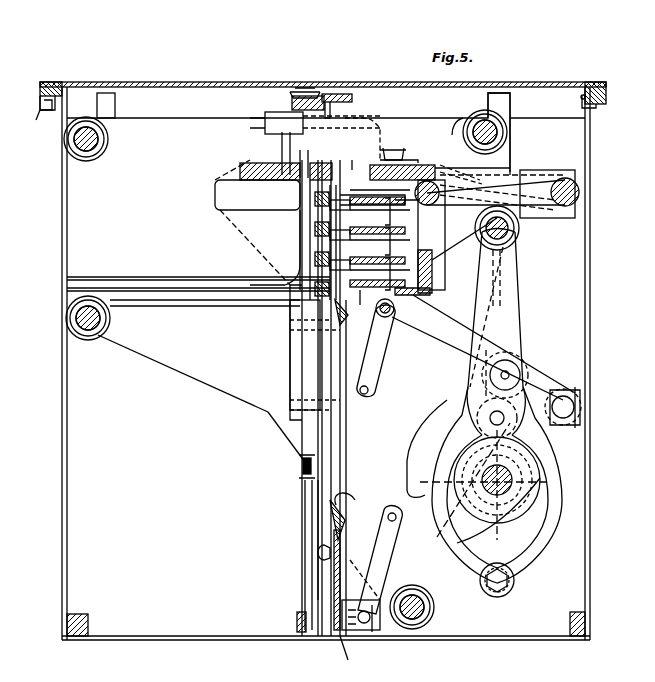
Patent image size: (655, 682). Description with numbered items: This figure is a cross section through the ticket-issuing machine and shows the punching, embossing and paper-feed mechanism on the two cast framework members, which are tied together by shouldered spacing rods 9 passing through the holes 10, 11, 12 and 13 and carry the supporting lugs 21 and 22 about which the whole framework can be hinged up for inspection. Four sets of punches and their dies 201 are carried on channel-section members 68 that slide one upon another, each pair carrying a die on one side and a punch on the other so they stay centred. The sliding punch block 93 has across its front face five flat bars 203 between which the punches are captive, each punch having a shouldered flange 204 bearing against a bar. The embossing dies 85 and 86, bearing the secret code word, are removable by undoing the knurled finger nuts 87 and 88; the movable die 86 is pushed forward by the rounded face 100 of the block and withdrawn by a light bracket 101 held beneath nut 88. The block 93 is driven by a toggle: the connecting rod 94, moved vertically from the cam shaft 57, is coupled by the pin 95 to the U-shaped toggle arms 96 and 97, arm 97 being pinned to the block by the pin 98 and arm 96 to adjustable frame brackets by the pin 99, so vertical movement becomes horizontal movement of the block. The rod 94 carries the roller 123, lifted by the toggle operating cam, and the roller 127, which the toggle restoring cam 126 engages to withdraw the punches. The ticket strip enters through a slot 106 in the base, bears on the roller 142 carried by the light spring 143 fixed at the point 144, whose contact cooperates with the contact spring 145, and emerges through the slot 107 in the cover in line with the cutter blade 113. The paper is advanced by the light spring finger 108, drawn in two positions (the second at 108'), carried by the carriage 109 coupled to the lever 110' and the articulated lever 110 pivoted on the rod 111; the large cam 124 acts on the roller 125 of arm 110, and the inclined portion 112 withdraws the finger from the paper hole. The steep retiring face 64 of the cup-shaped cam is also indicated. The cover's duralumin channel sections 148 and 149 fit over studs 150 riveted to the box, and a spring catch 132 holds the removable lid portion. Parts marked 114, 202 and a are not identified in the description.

The shouldered spacing rod 9 is at (96, 148).
The hole 10 is at (108, 133).
The hole 11 is at (505, 122).
The hole 12 is at (110, 318).
The hole 13 is at (434, 603).
The supporting lug 21 is at (115, 103).
The supporting lug 22 is at (510, 95).
The cam shaft 57 is at (510, 473).
The steep retiring face 64 is at (308, 160).
The channel section member 68 is at (315, 215).
The embossing die 85 is at (290, 160).
The embossing die 86 is at (355, 162).
The knurled finger nut 87 is at (265, 124).
The knurled finger nut 88 is at (412, 160).
The punch block 93 is at (462, 160).
The connecting rod 94 is at (523, 320).
The pin 95 is at (510, 240).
The toggle arm 96 is at (548, 212).
The toggle arm 97 is at (452, 254).
The pin 98 is at (510, 180).
The pin 99 is at (579, 192).
The rounded face 100 is at (393, 141).
The light bracket 101 is at (410, 165).
The slot 106 is at (348, 636).
The slot 107 is at (330, 86).
The spring finger 108 is at (362, 419).
The pivot pin 108' is at (396, 580).
The carriage member 109 is at (370, 634).
The articulated lever 110 is at (483, 347).
The lever 110' is at (392, 459).
The rod 111 is at (565, 388).
The inclined portion 112 is at (290, 322).
The cutter blade 113 is at (292, 103).
The plate 114 is at (352, 96).
The roller 123 is at (490, 412).
The cam 124 is at (440, 440).
The roller 125 is at (510, 360).
The toggle restoring cam 126 is at (533, 480).
The roller 127 is at (512, 585).
The spring catch 132 is at (62, 88).
The roller 142 is at (318, 555).
The light spring 143 is at (316, 510).
The fixing point 144 is at (300, 468).
The contact spring 145 is at (305, 527).
The channel section duralumin 148 is at (35, 113).
The channel section duralumin 149 is at (596, 106).
The stud 150 is at (606, 90).
The die 201 is at (330, 232).
The gear 202 is at (386, 207).
The flat bar 203 is at (385, 300).
The shouldered flange 204 is at (391, 241).
The cam a is at (215, 203).